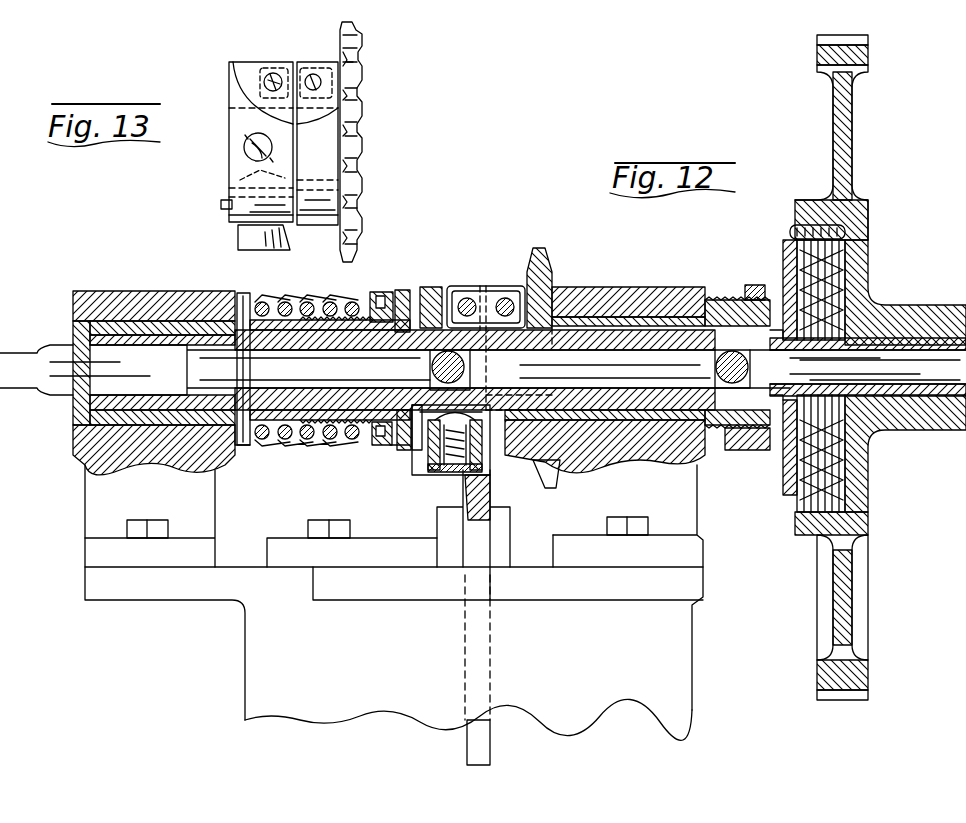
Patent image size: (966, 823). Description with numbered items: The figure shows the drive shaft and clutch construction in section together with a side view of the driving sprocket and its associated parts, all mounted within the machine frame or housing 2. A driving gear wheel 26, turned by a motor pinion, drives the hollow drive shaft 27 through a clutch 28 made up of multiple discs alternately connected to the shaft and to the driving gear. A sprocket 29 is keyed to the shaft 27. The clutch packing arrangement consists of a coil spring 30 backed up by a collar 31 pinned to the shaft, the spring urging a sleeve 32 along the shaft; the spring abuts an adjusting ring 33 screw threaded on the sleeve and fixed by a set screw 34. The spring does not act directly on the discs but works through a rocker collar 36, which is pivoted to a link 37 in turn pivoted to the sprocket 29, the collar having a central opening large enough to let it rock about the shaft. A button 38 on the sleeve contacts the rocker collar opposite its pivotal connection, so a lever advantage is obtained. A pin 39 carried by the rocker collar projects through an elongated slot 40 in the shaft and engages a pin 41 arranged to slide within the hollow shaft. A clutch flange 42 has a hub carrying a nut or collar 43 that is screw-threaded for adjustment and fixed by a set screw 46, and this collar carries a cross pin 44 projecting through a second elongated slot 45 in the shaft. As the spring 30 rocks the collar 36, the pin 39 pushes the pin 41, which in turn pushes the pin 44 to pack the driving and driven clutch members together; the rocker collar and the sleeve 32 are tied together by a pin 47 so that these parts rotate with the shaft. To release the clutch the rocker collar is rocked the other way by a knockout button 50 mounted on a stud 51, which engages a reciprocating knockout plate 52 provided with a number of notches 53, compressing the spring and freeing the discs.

In FIG. 12, the housing / frame 2 is at (690, 636).
In FIG. 12, the driving gear wheel 26 is at (852, 120).
In FIG. 12, the drive shaft 27 is at (636, 334).
In FIG. 12, the clutch 28 is at (832, 270).
In FIG. 13, the sprocket 29 is at (355, 62).
In FIG. 12, the sprocket 29 is at (550, 276).
In FIG. 12, the coil spring 30 is at (292, 425).
In FIG. 12, the collar 31 is at (246, 446).
In FIG. 12, the sleeve 32 is at (372, 426).
In FIG. 12, the ring 33 is at (372, 295).
In FIG. 12, the set screw 34 is at (380, 446).
In FIG. 13, the rocker collar 36 is at (240, 104).
In FIG. 12, the rocker collar 36 is at (431, 287).
In FIG. 13, the link 37 is at (278, 62).
In FIG. 12, the link 37 is at (484, 286).
In FIG. 12, the button 38 is at (418, 440).
In FIG. 13, the pin 39 is at (244, 148).
In FIG. 12, the pin 39 is at (447, 360).
In FIG. 12, the elongated slot 40 is at (432, 372).
In FIG. 12, the pin 41 is at (595, 356).
In FIG. 12, the clutch flange 42 is at (790, 490).
In FIG. 12, the nut or collar 43 is at (762, 450).
In FIG. 12, the cross pin 44 is at (735, 385).
In FIG. 12, the elongated slot 45 is at (778, 368).
In FIG. 12, the set screw 46 is at (756, 285).
In FIG. 13, the pin 47 is at (222, 203).
In FIG. 12, the pin 47 is at (432, 445).
In FIG. 13, the knockout button 50 is at (238, 235).
In FIG. 12, the knockout button 50 is at (445, 472).
In FIG. 12, the stud 51 is at (455, 472).
In FIG. 12, the knockout plate 52 is at (492, 497).
In FIG. 12, the notches 53 is at (470, 480).